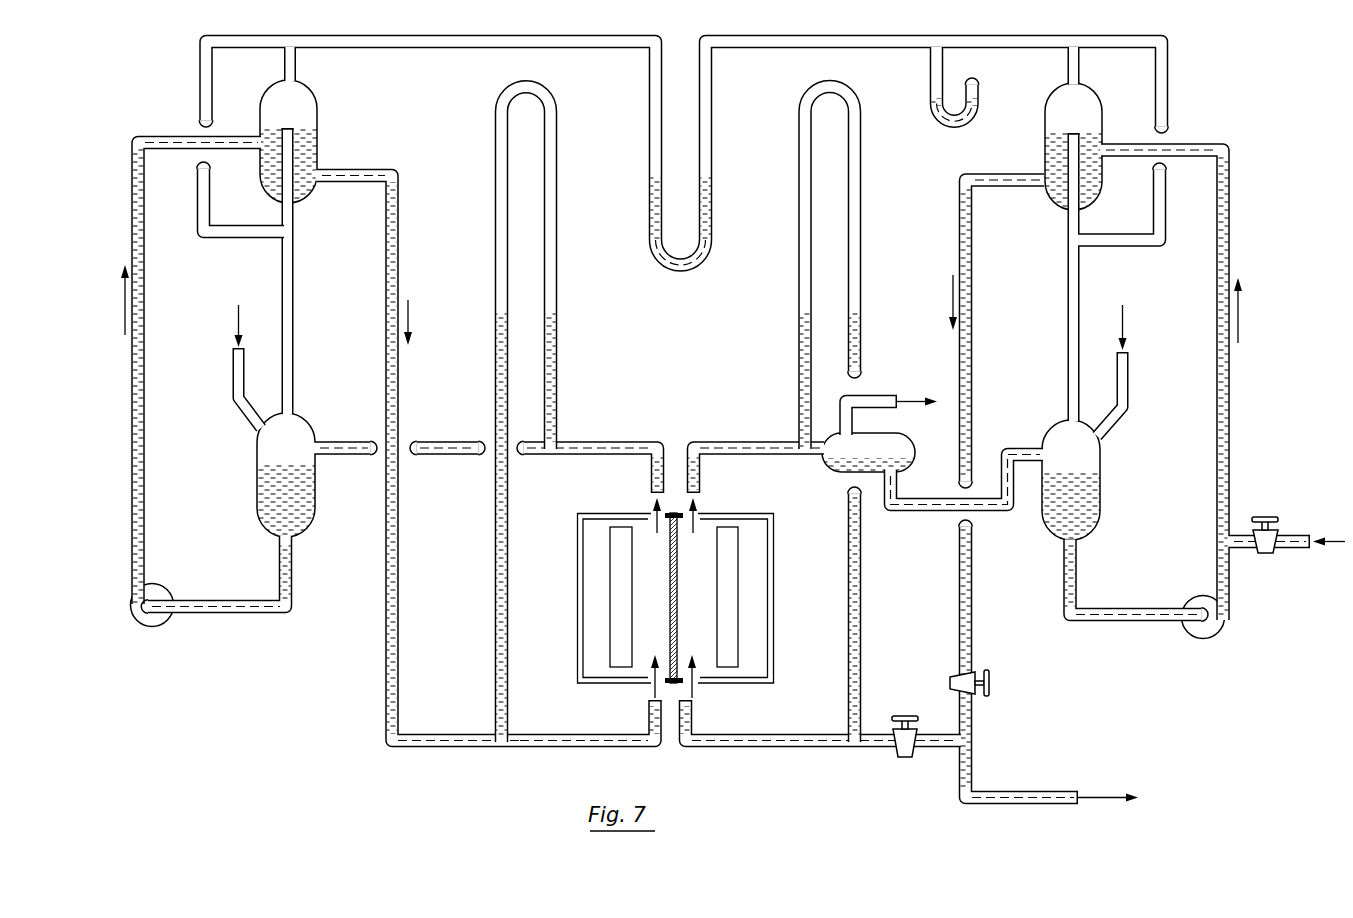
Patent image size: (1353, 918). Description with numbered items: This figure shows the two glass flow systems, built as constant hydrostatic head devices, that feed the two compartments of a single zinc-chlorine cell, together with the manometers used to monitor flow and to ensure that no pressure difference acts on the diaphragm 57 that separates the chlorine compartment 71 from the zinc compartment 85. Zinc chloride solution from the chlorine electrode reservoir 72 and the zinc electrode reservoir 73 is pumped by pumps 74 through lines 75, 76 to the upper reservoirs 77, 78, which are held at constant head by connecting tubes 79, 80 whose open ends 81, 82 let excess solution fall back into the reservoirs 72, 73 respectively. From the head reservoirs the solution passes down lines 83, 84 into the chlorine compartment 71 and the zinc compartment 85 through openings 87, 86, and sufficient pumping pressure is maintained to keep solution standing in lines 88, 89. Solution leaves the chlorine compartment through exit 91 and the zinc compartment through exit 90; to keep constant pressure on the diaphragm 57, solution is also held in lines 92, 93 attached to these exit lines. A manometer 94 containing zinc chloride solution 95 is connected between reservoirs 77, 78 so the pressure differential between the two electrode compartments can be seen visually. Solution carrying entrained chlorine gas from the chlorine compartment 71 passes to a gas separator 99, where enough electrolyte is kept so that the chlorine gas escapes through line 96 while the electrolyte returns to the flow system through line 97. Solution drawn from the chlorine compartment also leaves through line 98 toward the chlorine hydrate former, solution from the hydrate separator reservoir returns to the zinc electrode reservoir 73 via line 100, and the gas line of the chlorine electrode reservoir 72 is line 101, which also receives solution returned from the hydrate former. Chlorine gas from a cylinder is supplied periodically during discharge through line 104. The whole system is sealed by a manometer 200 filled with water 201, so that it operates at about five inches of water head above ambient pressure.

The diaphragm 57 is at (670, 600).
The chlorine compartment 71 is at (742, 592).
The chlorine electrode reservoir 72 is at (1100, 482).
The zinc electrode reservoir 73 is at (258, 472).
The pumps 74 is at (140, 627).
The line 75 is at (1230, 390).
The line 76 is at (131, 378).
The reservoir 77 is at (1045, 132).
The reservoir 78 is at (318, 140).
The connecting tube 79 is at (1067, 296).
The connecting tube 80 is at (294, 300).
The open end 81 is at (1080, 108).
The open end 82 is at (297, 108).
The line 83 is at (973, 370).
The line 84 is at (386, 366).
The zinc compartment 85 is at (582, 593).
The opening 86 is at (648, 718).
The opening 87 is at (700, 718).
The line 88 is at (495, 255).
The line 89 is at (862, 232).
The exit 90 is at (650, 487).
The exit 91 is at (700, 487).
The line 92 is at (558, 322).
The line 93 is at (798, 322).
The manometer 94 is at (648, 133).
The zinc chloride solution 95 is at (648, 238).
The line 96 is at (852, 395).
The line 97 is at (925, 513).
The line 98 is at (1030, 790).
The gas separator 99 is at (836, 470).
The line 100 is at (232, 378).
The gas line 101 is at (1129, 380).
The line 104 is at (1285, 535).
The manometer 200 is at (980, 88).
The water 201 is at (940, 125).